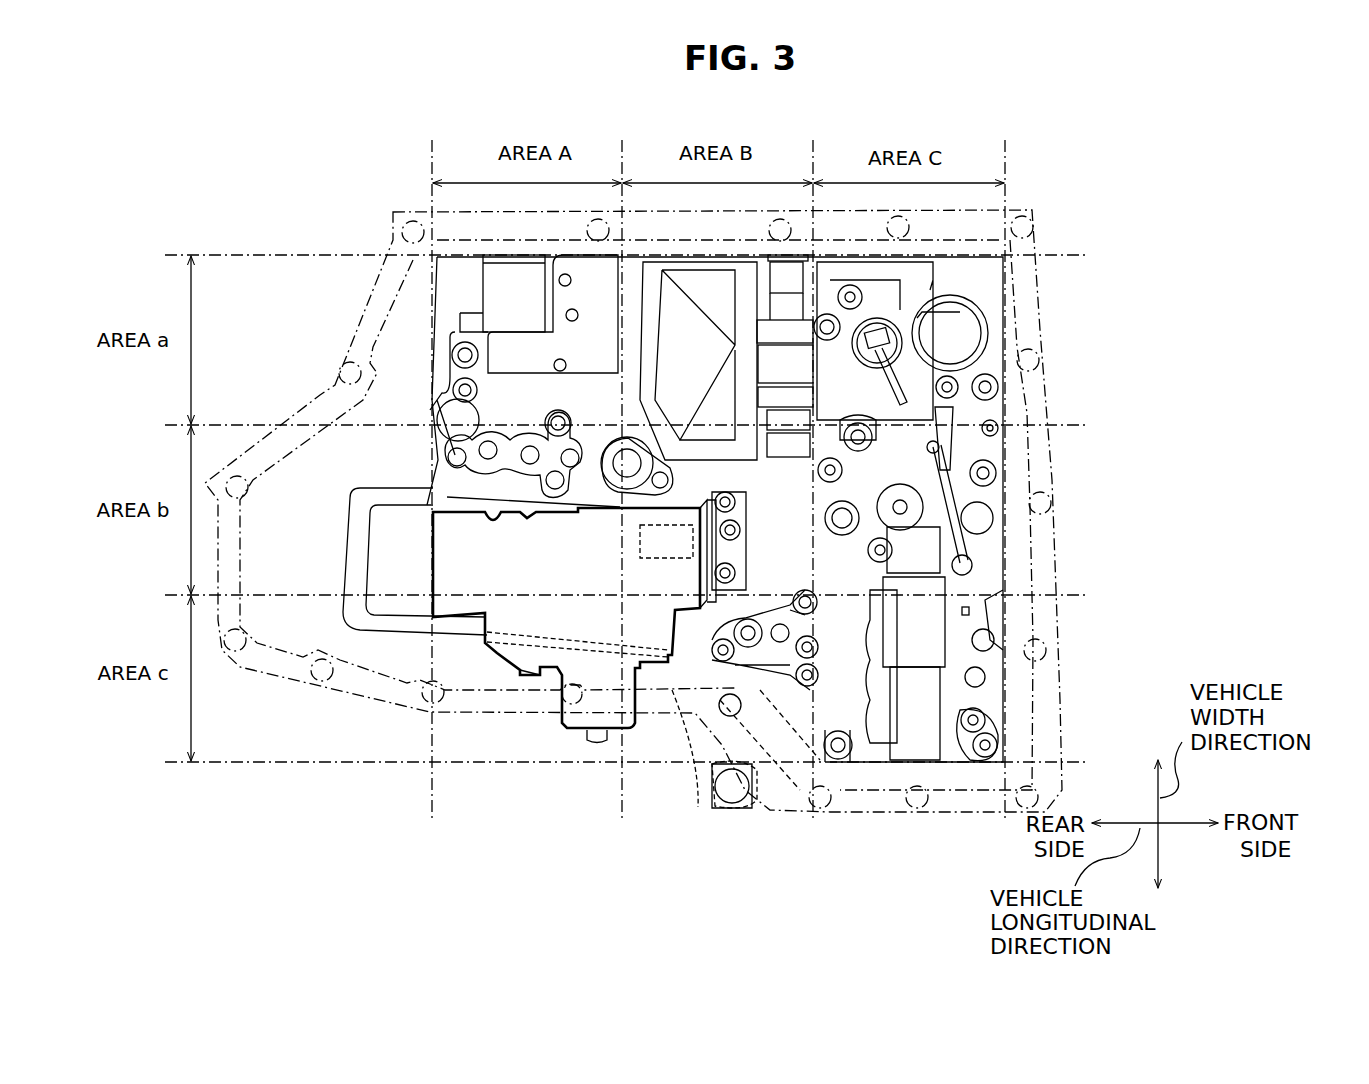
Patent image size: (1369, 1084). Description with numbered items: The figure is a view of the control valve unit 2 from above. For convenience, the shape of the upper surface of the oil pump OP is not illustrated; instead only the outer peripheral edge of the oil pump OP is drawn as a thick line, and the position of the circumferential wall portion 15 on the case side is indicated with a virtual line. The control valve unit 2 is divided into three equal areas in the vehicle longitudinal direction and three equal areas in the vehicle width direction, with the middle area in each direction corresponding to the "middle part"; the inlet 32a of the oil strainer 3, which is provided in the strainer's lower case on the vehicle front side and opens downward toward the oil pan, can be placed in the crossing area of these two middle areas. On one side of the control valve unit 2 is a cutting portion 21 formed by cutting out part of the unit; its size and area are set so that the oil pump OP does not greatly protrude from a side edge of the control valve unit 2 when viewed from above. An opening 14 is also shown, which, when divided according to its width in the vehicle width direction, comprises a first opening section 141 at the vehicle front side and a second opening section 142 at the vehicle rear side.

The control valve unit 2 is at (988, 323).
The oil strainer 3 is at (347, 545).
The opening 14 is at (715, 808).
The first opening section 141 is at (745, 740).
The second opening section 142 is at (684, 782).
The circumferential wall portion 15 is at (1070, 565).
The cutting portion 21 is at (686, 505).
The inlet 32a is at (640, 545).
The oil pump OP is at (528, 678).